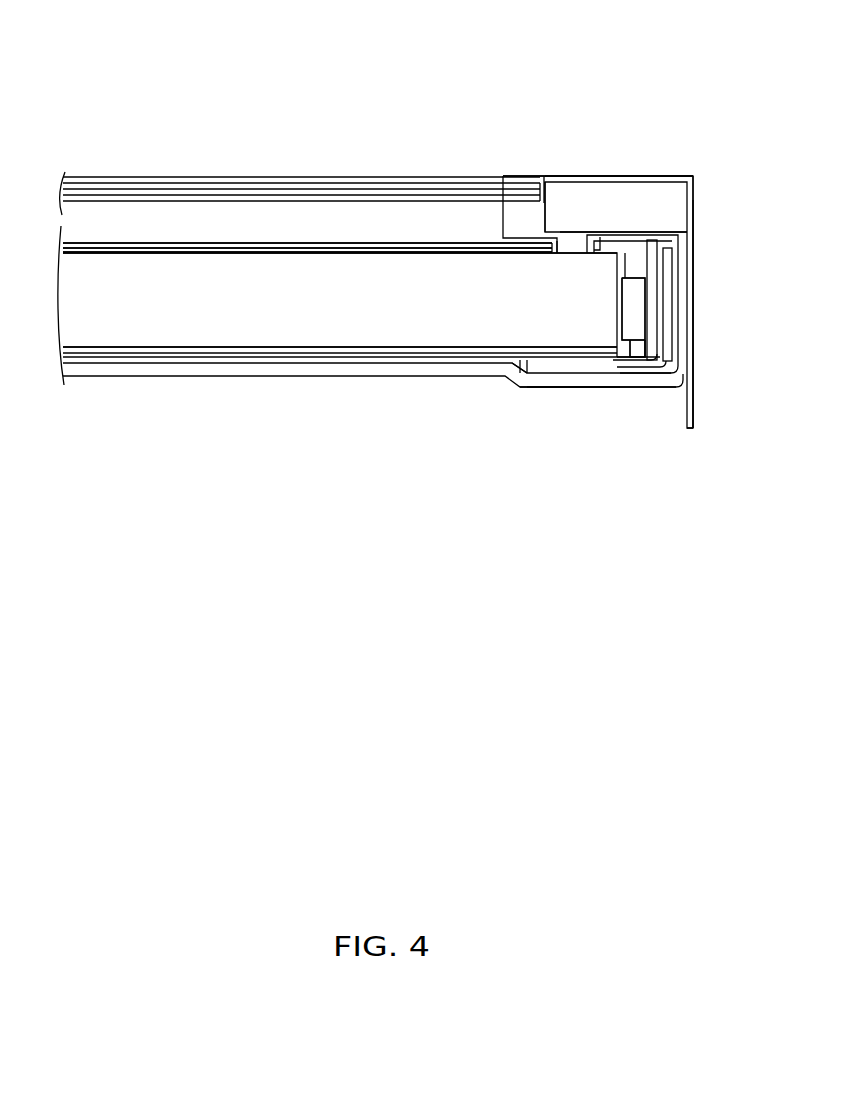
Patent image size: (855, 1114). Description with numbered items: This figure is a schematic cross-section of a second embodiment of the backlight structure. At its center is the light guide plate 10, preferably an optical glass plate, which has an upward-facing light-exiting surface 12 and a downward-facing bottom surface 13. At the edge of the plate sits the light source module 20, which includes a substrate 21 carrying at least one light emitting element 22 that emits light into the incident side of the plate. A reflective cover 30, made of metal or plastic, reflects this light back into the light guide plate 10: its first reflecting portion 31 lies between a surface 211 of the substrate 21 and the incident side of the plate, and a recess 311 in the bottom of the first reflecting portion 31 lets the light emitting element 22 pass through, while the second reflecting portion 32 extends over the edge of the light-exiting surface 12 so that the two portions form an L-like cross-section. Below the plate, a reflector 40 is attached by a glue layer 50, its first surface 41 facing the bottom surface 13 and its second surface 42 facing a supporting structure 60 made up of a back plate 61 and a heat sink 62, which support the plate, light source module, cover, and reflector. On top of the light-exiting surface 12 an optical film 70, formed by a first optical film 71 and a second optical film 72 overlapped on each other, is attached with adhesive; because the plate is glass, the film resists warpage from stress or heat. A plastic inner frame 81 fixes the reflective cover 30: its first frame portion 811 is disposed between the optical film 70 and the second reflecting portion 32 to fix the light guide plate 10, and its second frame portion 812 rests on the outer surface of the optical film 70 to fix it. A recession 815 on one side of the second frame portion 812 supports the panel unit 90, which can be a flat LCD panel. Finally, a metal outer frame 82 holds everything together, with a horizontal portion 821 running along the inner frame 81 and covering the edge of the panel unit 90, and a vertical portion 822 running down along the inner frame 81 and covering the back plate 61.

The light guide plate 10 is at (247, 274).
The light-exiting surface 12 is at (362, 250).
The bottom surface 13 is at (347, 355).
The light source module 20 is at (735, 290).
The substrate 21 is at (651, 338).
The surface of the substrate 211 is at (648, 350).
The light emitting element 22 is at (646, 293).
The reflective cover 30 is at (723, 155).
The first reflecting portion 31 is at (652, 262).
The recess 311 is at (664, 280).
The second reflecting portion 32 is at (600, 250).
The reflector 40 is at (93, 358).
The first surface 41 is at (165, 352).
The second surface 42 is at (273, 363).
The glue layer 50 is at (190, 350).
The supporting structure 60 is at (593, 460).
The back plate 61 is at (540, 380).
The heat sink 62 is at (582, 370).
The optical film 70 is at (473, 112).
The first optical film 71 is at (457, 248).
The second optical film 72 is at (412, 243).
The inner frame 81 is at (568, 180).
The first frame portion 811 is at (586, 237).
The second frame portion 812 is at (510, 200).
The recession 815 is at (543, 176).
The outer frame 82 is at (795, 85).
The horizontal portion 821 is at (573, 237).
The vertical portion 822 is at (693, 292).
The panel unit 90 is at (56, 177).